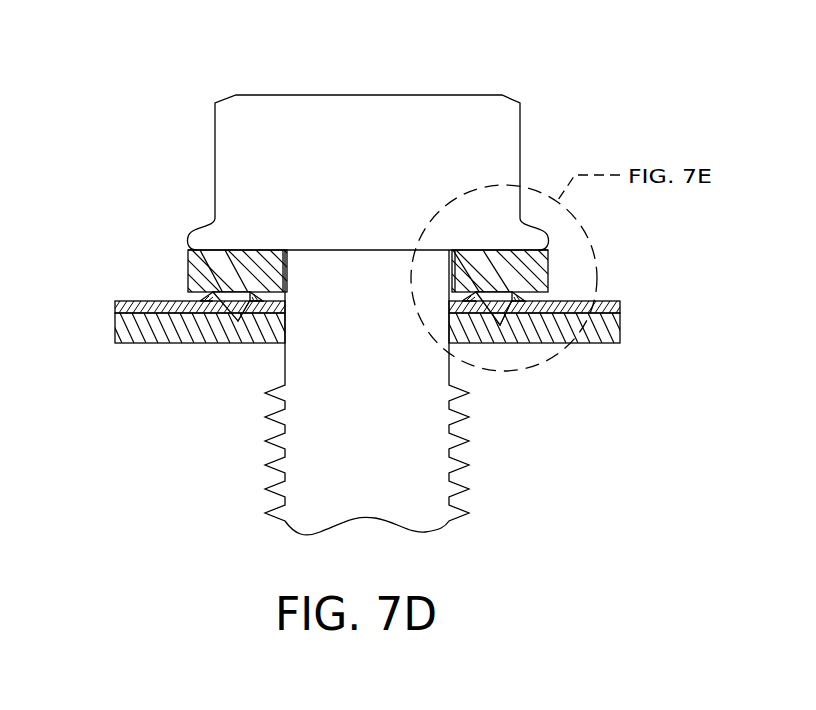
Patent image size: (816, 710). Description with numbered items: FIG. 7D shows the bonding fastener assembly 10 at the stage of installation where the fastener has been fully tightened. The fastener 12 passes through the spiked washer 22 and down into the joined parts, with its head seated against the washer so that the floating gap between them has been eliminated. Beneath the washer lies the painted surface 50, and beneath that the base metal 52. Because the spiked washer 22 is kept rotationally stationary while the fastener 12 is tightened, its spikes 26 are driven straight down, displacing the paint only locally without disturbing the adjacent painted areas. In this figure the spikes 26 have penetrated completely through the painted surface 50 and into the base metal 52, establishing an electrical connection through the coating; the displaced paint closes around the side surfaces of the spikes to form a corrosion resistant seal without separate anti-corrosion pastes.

The bonding fastener assembly 10 is at (582, 95).
The fastener 12 is at (215, 168).
The spiked washer 22 is at (188, 272).
The spikes 26 is at (245, 316).
The painted surface 50 is at (115, 303).
The base metal 52 is at (115, 326).